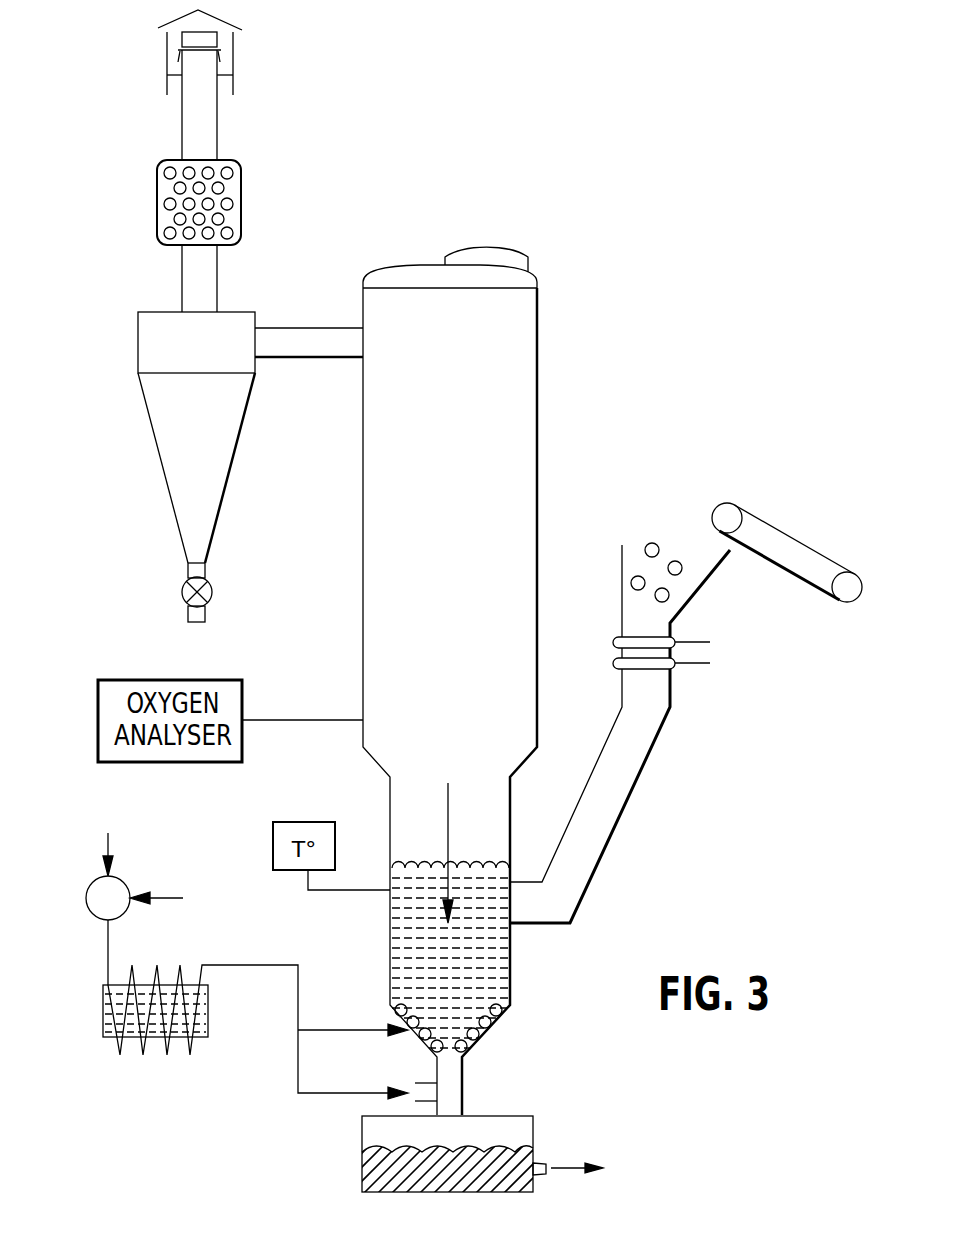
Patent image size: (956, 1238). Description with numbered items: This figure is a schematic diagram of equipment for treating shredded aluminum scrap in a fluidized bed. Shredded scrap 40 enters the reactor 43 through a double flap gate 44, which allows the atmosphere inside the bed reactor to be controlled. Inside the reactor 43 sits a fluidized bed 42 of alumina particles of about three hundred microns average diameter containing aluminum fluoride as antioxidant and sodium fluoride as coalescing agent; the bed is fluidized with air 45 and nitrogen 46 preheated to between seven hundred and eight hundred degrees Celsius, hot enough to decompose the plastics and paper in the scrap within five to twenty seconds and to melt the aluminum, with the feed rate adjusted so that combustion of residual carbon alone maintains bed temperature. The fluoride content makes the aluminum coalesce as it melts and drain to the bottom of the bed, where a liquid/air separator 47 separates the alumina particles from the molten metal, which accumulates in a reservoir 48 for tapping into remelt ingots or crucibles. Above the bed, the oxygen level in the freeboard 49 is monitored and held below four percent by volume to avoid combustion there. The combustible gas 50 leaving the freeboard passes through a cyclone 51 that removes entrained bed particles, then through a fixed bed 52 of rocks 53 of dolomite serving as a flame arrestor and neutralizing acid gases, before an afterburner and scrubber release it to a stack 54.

The shredded scrap 40 is at (680, 569).
The fluidized bed 42 is at (490, 950).
The reactor 43 is at (493, 1020).
The double flap gate 44 is at (652, 672).
The air 45 is at (105, 844).
The nitrogen 46 is at (172, 898).
The liquid/air separator 47 is at (465, 1081).
The reservoir 48 is at (522, 1138).
The freeboard 49 is at (450, 681).
The gas 50 is at (311, 320).
The cyclone 51 is at (167, 445).
The fixed bed 52 is at (243, 180).
The rocks 53 is at (233, 205).
The stack 54 is at (228, 51).